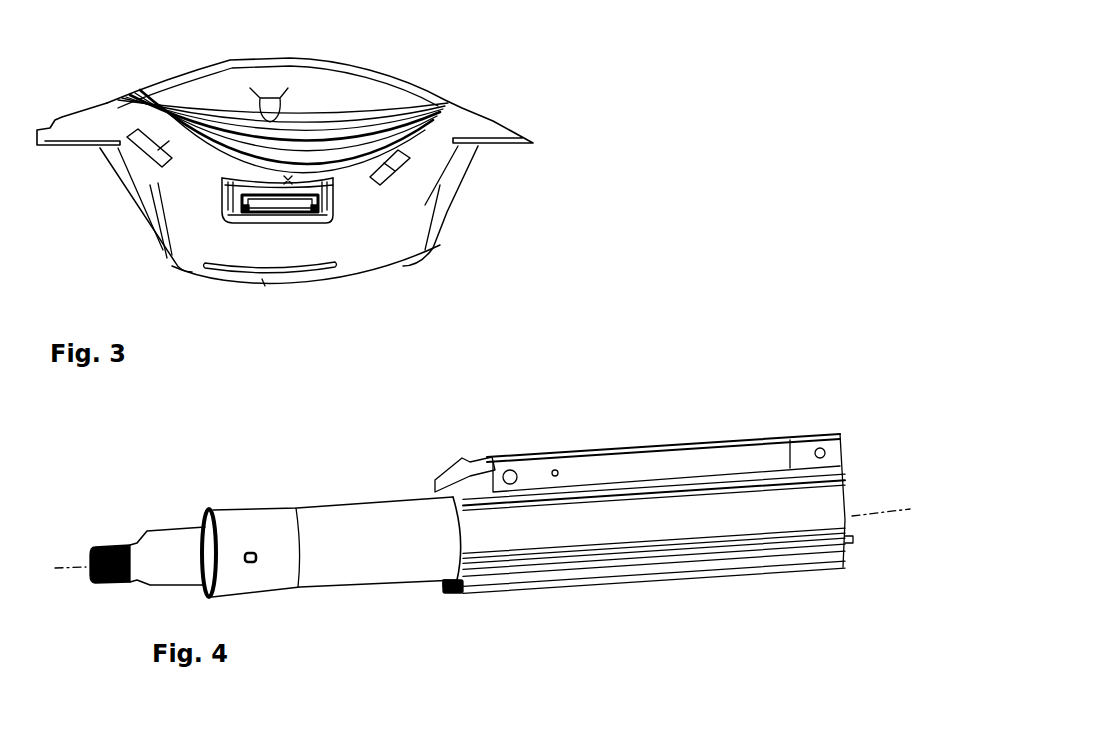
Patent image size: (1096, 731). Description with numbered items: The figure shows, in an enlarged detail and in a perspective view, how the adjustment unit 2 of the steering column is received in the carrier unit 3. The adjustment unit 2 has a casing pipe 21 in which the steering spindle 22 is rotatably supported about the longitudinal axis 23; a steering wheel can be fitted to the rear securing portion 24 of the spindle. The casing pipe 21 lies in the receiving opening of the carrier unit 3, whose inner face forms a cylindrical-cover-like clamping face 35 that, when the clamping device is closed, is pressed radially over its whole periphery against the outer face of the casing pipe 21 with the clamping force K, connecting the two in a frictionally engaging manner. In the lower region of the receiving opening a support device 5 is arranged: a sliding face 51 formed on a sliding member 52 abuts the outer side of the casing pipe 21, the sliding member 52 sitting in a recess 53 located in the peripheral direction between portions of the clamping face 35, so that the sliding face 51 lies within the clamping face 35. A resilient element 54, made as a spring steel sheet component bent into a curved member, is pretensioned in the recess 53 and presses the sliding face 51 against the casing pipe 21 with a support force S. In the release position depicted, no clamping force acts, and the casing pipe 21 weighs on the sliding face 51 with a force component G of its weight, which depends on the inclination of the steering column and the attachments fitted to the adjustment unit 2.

In FIG. 4, the adjustment unit 2 is at (363, 500).
In FIG. 4, the casing pipe 21 is at (325, 523).
In FIG. 4, the steering spindle 22 is at (168, 547).
In FIG. 4, the longitudinal axis 23 is at (78, 567).
In FIG. 4, the securing portion 24 is at (125, 545).
In FIG. 4, the carrier unit 3 is at (578, 525).
In FIG. 3, the clamping face 35 is at (176, 160).
In FIG. 3, the support device 5 is at (267, 260).
In FIG. 4, the support device 5 is at (434, 643).
In FIG. 3, the sliding face 51 is at (286, 182).
In FIG. 3, the sliding member 52 is at (235, 200).
In FIG. 4, the sliding member 52 is at (455, 590).
In FIG. 3, the recess 53 is at (290, 178).
In FIG. 4, the recess 53 is at (452, 590).
In FIG. 3, the resilient element 54 is at (253, 220).
In FIG. 3, the force component of the weight force G is at (289, 180).
In FIG. 4, the force component of the weight force G is at (455, 592).
In FIG. 3, the clamping force K is at (192, 181).
In FIG. 3, the support force S is at (289, 182).
In FIG. 4, the support force S is at (455, 583).